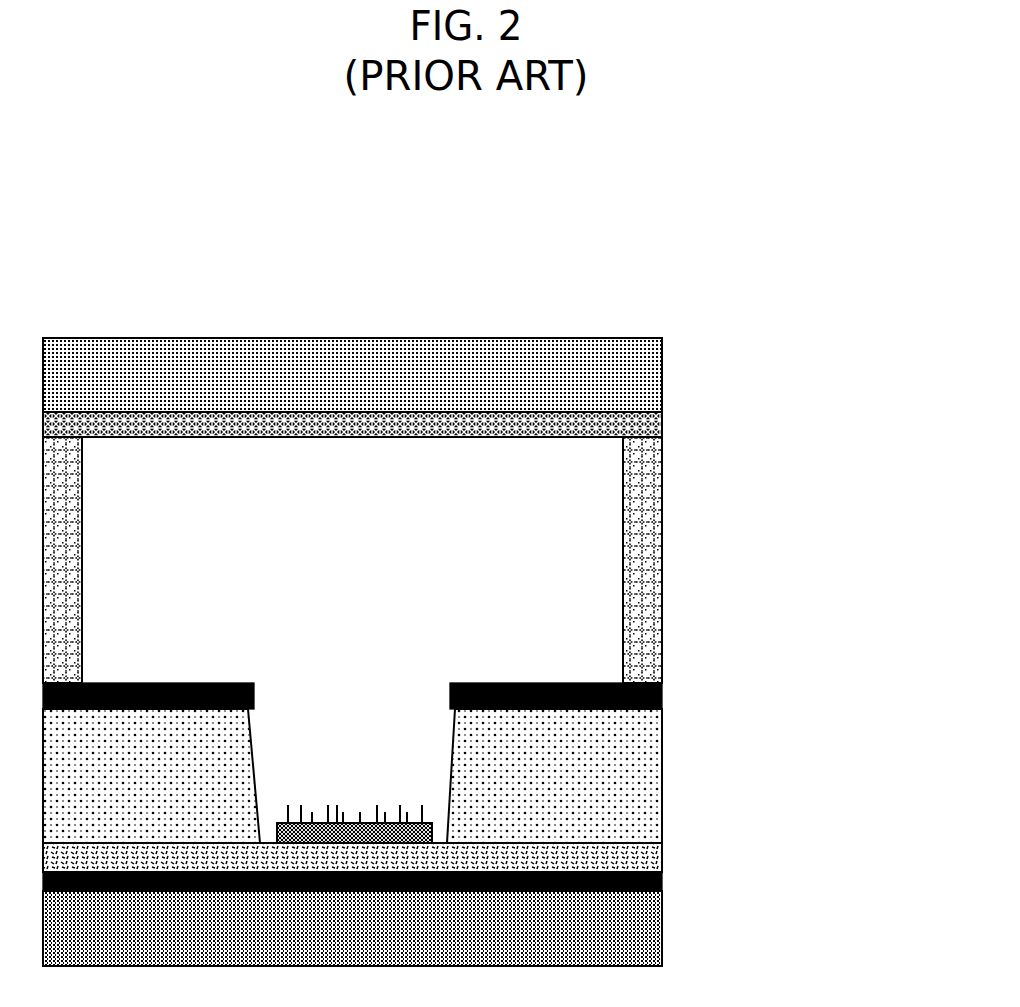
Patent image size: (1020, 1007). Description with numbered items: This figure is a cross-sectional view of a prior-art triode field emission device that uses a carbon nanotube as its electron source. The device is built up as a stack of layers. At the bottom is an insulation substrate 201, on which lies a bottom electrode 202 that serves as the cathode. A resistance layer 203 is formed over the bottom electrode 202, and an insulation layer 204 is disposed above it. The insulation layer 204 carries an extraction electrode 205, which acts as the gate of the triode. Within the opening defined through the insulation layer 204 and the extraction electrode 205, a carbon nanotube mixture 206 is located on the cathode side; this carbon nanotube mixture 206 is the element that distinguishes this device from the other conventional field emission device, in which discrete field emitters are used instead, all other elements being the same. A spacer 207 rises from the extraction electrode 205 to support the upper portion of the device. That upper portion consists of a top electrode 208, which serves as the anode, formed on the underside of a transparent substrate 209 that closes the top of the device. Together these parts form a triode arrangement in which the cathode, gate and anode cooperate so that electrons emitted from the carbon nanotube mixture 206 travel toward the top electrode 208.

The insulation substrate 201 is at (662, 930).
The bottom electrode 202 is at (662, 880).
The resistance layer 203 is at (662, 853).
The insulation layer 204 is at (662, 771).
The extraction electrode 205 is at (662, 693).
The carbon nanotube mixture 206 is at (350, 823).
The spacer 207 is at (662, 562).
The top electrode 208 is at (662, 417).
The transparent substrate 209 is at (662, 361).